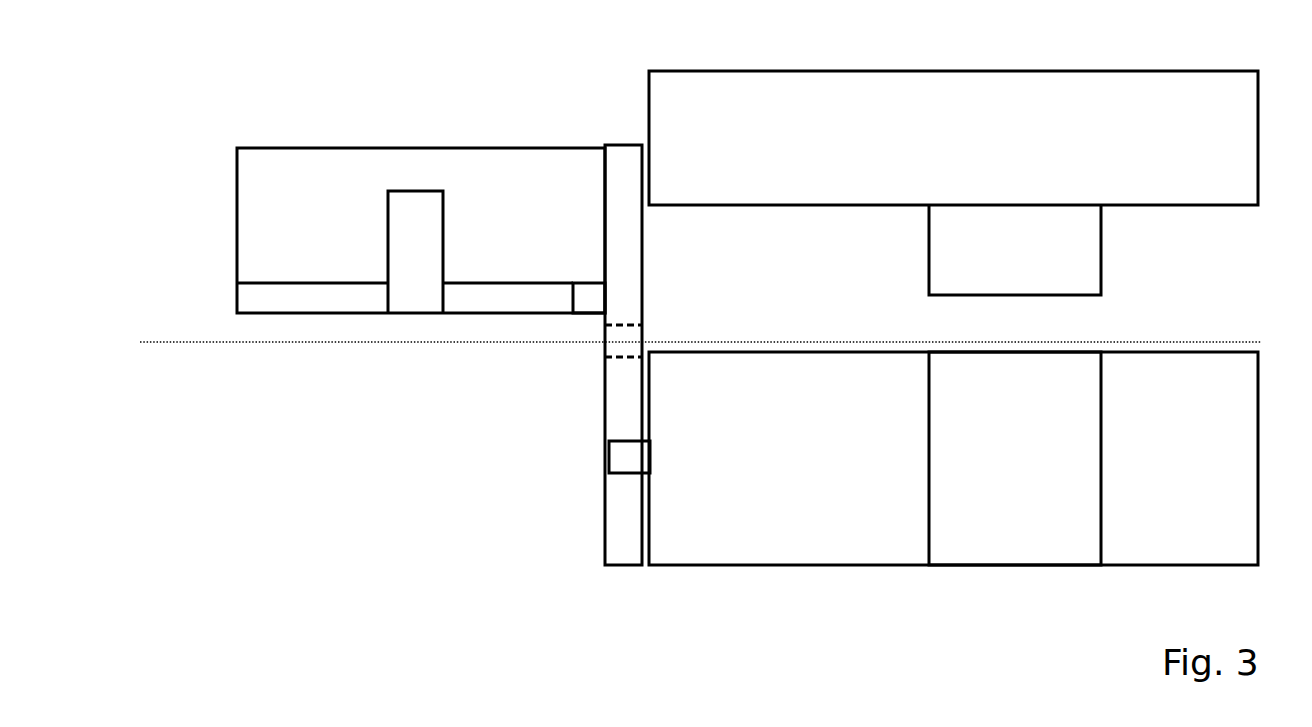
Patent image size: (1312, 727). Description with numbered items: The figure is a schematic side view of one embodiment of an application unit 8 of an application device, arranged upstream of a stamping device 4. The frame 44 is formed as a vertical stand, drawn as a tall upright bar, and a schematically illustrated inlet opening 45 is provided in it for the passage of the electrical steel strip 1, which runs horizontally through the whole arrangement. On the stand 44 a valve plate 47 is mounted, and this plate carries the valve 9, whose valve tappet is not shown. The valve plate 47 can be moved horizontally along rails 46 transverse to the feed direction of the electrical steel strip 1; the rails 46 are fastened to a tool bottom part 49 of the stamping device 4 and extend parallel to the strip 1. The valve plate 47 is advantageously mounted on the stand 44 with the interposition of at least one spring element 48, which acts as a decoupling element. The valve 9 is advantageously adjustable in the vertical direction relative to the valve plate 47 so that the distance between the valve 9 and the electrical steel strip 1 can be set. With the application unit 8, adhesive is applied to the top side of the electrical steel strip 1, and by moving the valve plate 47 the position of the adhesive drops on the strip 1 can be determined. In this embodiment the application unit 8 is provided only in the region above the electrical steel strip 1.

The electrical steel strip 1 is at (1155, 340).
The stamping device 4 is at (1078, 56).
The application unit 8 is at (481, 204).
The valve 9 is at (402, 228).
The frame 44 is at (627, 163).
The inlet opening 45 is at (622, 346).
The rails 46 is at (628, 457).
The valve plate 47 is at (505, 295).
The spring element 48 is at (585, 297).
The tool bottom part 49 is at (840, 538).